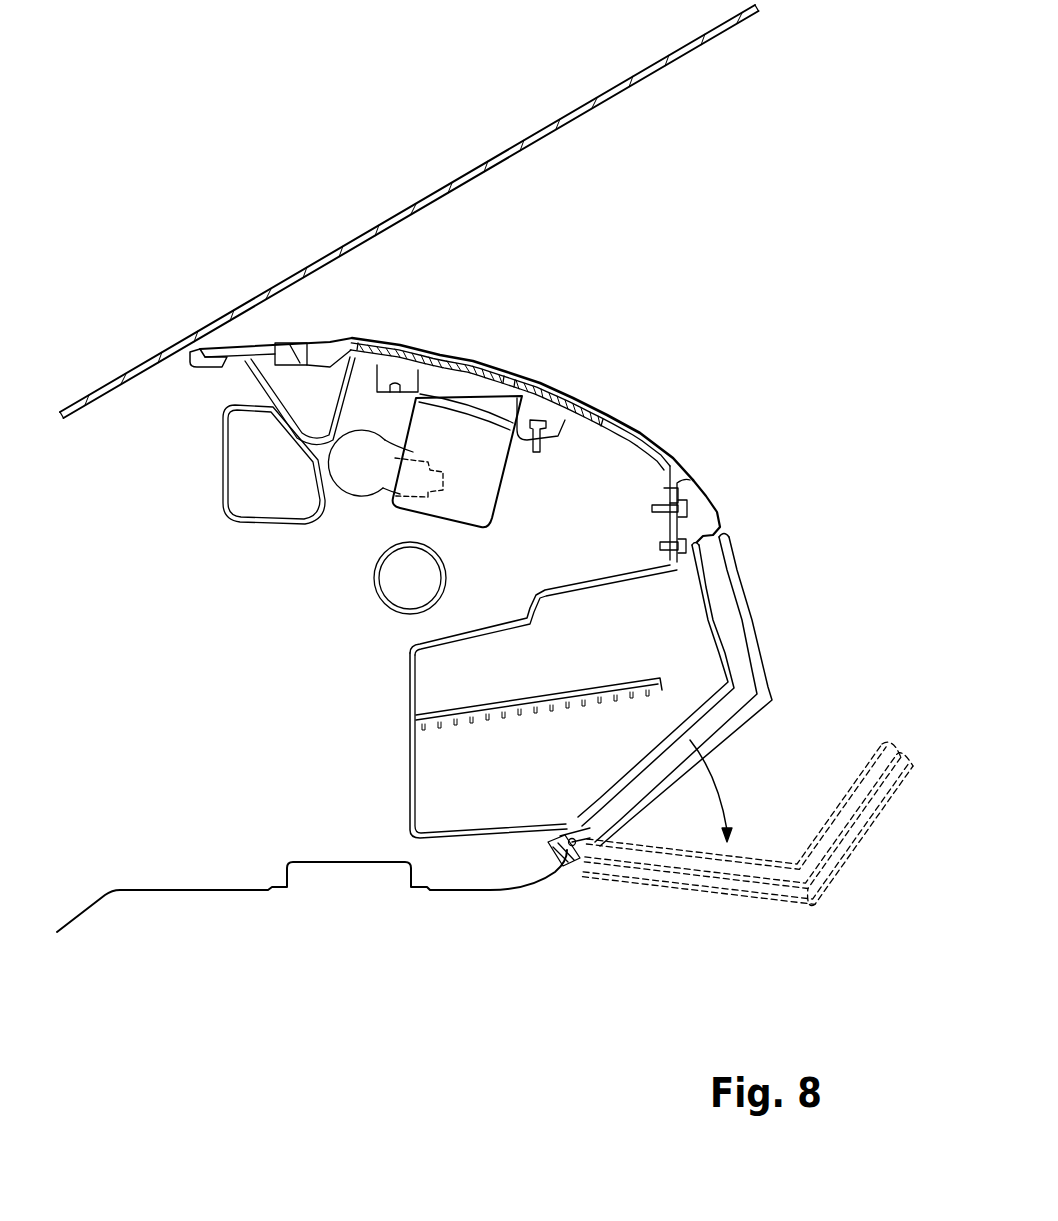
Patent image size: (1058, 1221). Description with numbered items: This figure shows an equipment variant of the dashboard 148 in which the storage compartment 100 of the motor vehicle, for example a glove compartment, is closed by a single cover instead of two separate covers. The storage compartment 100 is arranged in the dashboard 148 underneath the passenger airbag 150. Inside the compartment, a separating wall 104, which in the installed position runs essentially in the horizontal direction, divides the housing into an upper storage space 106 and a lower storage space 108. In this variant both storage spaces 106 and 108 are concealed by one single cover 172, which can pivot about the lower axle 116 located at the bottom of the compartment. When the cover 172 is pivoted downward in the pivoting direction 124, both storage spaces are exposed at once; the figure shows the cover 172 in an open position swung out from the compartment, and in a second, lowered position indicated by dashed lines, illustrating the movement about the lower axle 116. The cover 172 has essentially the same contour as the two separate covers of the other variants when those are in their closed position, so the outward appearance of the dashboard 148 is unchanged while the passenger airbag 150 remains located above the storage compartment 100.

The storage compartment 100 is at (767, 560).
The separating wall 104 is at (582, 690).
The upper storage space 106 is at (527, 678).
The lower storage space 108 is at (527, 791).
The lower axle 116 is at (575, 850).
The pivoting direction 124 is at (722, 800).
The dashboard 148 is at (648, 438).
The passenger airbag 150 is at (470, 358).
The single cover 172 is at (752, 629).